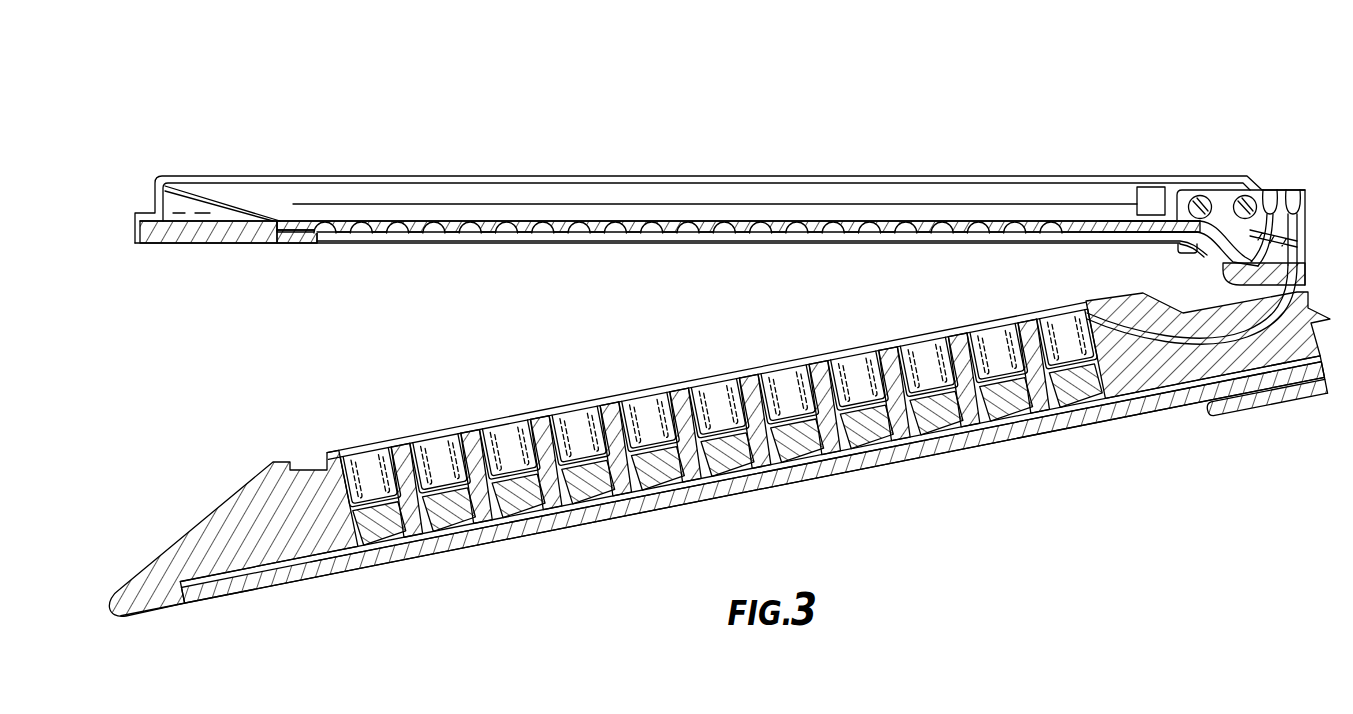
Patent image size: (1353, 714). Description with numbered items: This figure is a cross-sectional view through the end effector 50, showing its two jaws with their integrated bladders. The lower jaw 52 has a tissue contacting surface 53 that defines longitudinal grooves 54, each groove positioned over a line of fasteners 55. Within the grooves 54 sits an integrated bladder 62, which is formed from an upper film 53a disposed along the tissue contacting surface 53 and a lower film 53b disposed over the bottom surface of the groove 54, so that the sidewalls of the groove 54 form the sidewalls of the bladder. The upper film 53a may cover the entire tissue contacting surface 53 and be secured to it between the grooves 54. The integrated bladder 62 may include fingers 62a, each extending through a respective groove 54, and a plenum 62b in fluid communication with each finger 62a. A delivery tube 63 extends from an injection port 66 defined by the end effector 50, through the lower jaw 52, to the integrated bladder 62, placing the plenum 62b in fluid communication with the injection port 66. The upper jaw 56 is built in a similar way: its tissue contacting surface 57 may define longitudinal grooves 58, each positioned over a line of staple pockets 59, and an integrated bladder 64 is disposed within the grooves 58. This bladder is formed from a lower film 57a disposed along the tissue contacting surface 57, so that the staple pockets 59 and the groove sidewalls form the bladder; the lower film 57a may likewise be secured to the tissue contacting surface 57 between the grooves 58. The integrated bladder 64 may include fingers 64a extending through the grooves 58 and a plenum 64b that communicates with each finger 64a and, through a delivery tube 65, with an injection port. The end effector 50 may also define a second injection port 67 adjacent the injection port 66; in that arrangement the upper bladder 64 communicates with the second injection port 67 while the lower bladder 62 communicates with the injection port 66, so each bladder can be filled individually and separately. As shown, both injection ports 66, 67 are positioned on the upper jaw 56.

The end effector 50 is at (870, 114).
The lower jaw 52 is at (959, 476).
The tissue contacting surface 53 is at (303, 442).
The upper film 53a is at (384, 443).
The lower film 53b is at (810, 400).
The longitudinal grooves 54 is at (427, 437).
The fasteners 55 is at (512, 513).
The upper jaw 56 is at (708, 168).
The tissue contacting surface 57 is at (297, 258).
The lower film 57a is at (443, 245).
The longitudinal grooves 58 is at (588, 235).
The staple pockets 59 is at (503, 232).
The integrated bladder 62 is at (972, 415).
The fingers 62a is at (363, 457).
The plenum 62b is at (1125, 320).
The delivery tube 63 is at (1212, 338).
The integrated bladder 64 is at (383, 224).
The fingers 64a is at (430, 240).
The plenum 64b is at (1102, 220).
The delivery tube 65 is at (1214, 252).
The injection port 66 is at (1297, 188).
The second injection port 67 is at (1270, 190).